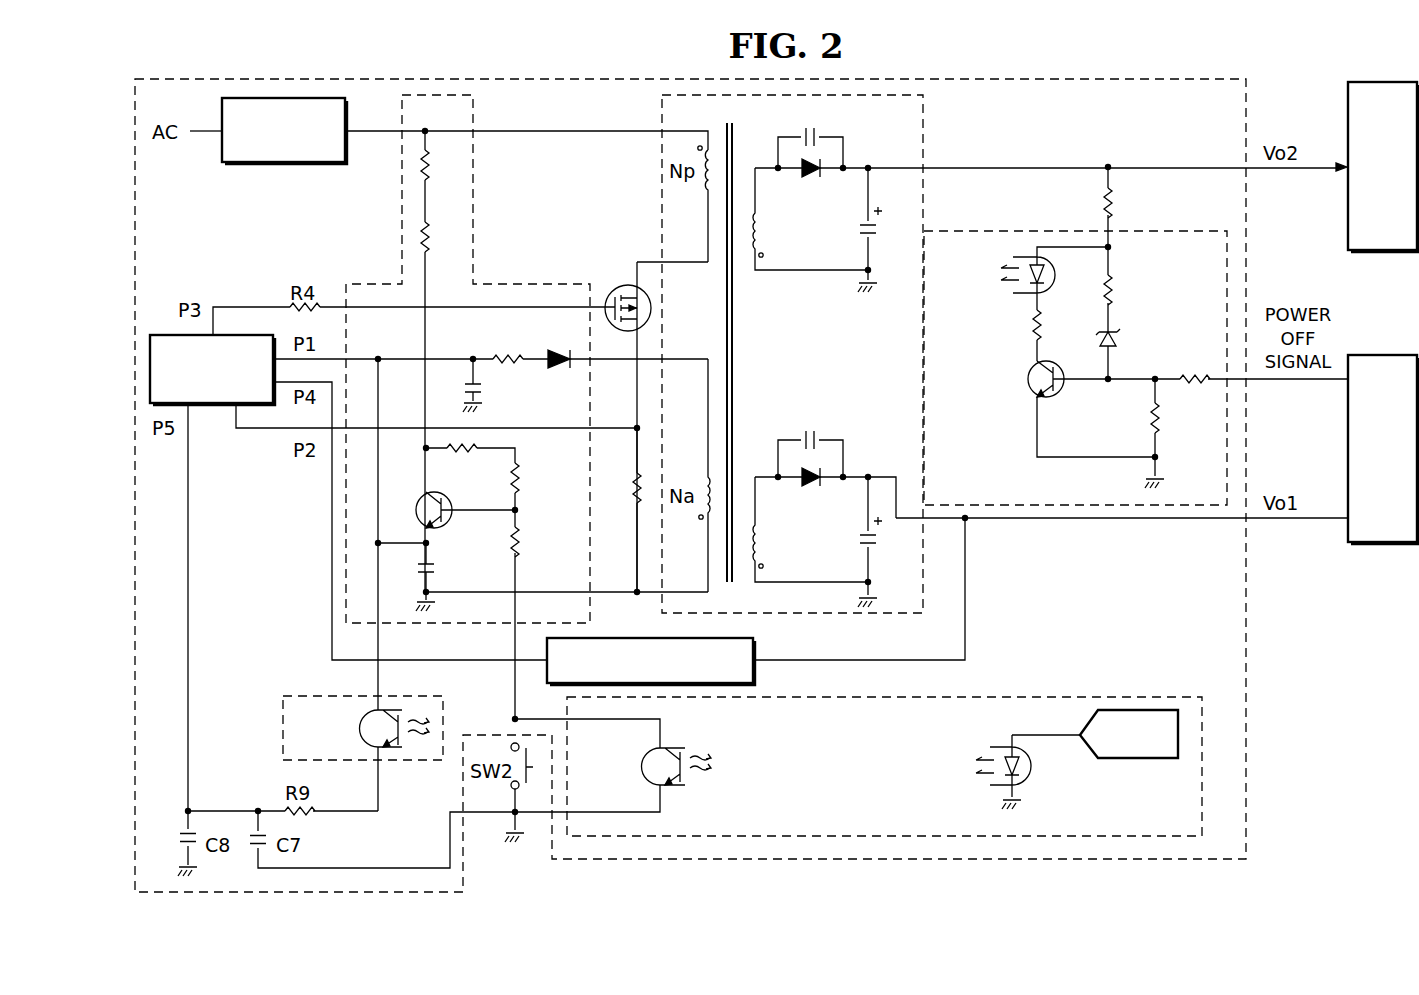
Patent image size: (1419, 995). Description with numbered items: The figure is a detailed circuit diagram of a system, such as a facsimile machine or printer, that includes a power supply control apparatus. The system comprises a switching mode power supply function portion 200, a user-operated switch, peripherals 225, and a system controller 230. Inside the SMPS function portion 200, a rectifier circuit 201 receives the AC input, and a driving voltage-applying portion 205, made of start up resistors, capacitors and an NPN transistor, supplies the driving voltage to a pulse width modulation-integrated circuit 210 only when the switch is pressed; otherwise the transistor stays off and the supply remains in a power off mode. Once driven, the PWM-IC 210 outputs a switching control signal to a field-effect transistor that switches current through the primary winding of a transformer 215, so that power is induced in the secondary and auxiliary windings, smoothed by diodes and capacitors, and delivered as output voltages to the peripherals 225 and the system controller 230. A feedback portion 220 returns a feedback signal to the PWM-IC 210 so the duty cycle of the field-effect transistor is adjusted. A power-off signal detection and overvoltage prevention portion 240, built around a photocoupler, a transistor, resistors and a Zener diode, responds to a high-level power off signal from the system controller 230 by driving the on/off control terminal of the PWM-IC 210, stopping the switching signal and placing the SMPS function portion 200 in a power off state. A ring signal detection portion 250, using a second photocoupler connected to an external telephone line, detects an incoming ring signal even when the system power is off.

The switching mode power supply (SMPS) function portion 200 is at (1248, 634).
The rectifier circuit 201 is at (287, 165).
The driving voltage-applying portion 205 is at (473, 191).
The pulse width modulation-integrated circuit (PWM-IC) 210 is at (213, 405).
The transformer 215 is at (924, 127).
The feedback portion 220 is at (757, 650).
The peripherals 225 is at (1382, 82).
The system controller 230 is at (1382, 355).
The power-off signal detection and overvoltage prevention portion 240 is at (1003, 231).
The ring signal detection portion 250 is at (1050, 697).